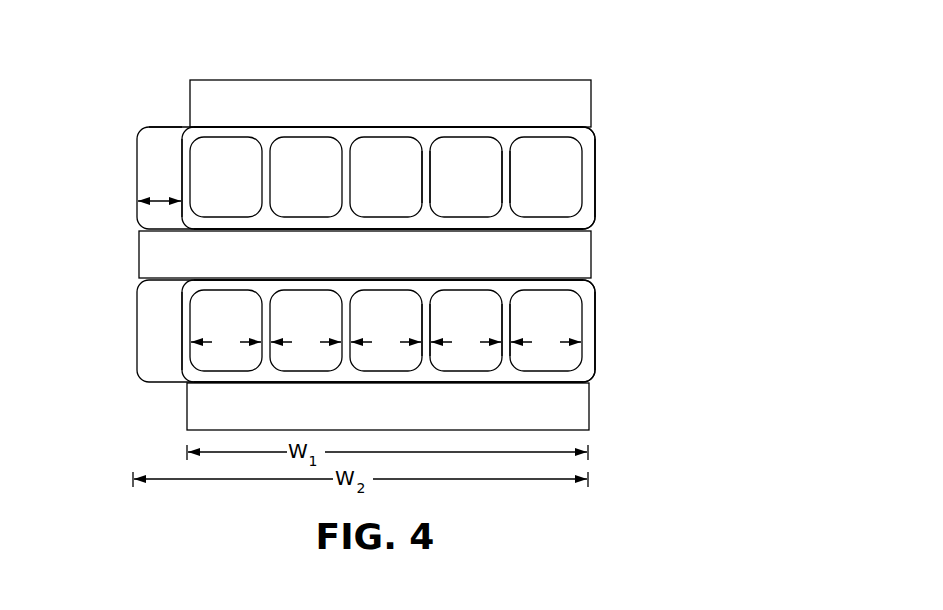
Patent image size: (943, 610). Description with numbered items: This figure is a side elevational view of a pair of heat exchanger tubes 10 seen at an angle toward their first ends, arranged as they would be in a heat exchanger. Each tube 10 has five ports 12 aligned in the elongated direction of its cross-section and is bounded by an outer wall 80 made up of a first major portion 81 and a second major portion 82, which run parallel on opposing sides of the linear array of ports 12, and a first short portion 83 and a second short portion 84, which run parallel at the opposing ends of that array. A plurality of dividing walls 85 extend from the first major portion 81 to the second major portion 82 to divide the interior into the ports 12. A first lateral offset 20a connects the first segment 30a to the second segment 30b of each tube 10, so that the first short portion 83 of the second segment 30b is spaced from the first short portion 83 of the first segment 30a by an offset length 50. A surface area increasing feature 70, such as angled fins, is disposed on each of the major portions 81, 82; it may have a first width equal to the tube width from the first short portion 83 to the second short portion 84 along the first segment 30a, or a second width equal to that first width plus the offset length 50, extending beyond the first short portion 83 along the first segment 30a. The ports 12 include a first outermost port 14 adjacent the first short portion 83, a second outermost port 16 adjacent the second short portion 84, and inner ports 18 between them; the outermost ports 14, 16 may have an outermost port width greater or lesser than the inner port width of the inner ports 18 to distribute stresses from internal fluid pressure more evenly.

The tube 10 is at (385, 235).
The port 12 is at (213, 189).
The first outermost port 14 is at (233, 354).
The second outermost port 16 is at (551, 357).
The inner port 18 is at (311, 363).
The first lateral offset 20a is at (162, 122).
The first segment 30a is at (225, 127).
The second segment 30b is at (143, 128).
The offset length 50 is at (162, 198).
The surface area increasing feature 70 is at (307, 92).
The outer wall 80 is at (593, 143).
The first major portion 81 is at (388, 134).
The second major portion 82 is at (388, 222).
The first short portion 83 is at (183, 157).
The second short portion 84 is at (591, 192).
The dividing wall 85 is at (428, 165).